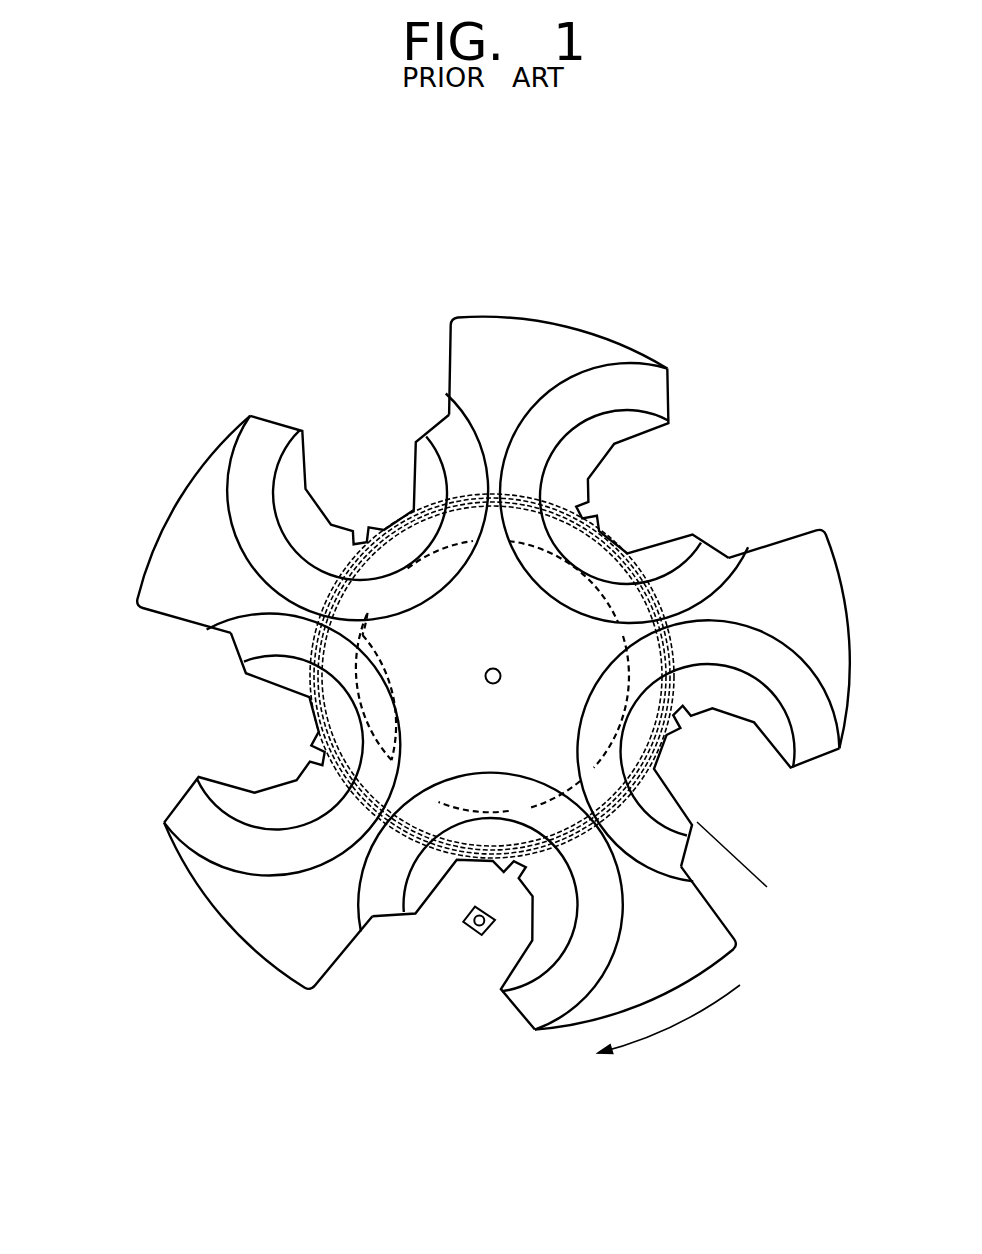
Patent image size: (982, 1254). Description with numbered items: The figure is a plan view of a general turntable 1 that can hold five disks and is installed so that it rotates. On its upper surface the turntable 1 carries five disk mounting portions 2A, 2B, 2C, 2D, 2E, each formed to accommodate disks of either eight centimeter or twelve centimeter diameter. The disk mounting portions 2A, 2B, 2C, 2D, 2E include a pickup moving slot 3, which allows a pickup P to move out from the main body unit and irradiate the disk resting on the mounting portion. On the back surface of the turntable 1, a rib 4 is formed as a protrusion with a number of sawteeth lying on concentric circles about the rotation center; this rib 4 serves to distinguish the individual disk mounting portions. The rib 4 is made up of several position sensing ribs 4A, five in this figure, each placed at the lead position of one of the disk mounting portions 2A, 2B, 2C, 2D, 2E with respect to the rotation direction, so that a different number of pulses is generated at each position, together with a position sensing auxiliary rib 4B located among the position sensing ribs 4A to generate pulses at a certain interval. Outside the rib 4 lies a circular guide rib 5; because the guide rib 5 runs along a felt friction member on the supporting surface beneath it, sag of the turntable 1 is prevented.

The turntable 1 is at (446, 691).
The disk mounting portion 2A is at (185, 803).
The disk mounting portion 2B is at (284, 428).
The disk mounting portion 2C is at (660, 470).
The disk mounting portion 2D is at (815, 747).
The disk mounting portion 2E is at (527, 1008).
The pickup moving slot 3 is at (662, 537).
The rib 4 is at (348, 676).
The position sensing rib 4A is at (360, 607).
The position sensing auxiliary rib 4B is at (360, 683).
The guide rib 5 is at (767, 887).
The pickup P is at (463, 923).